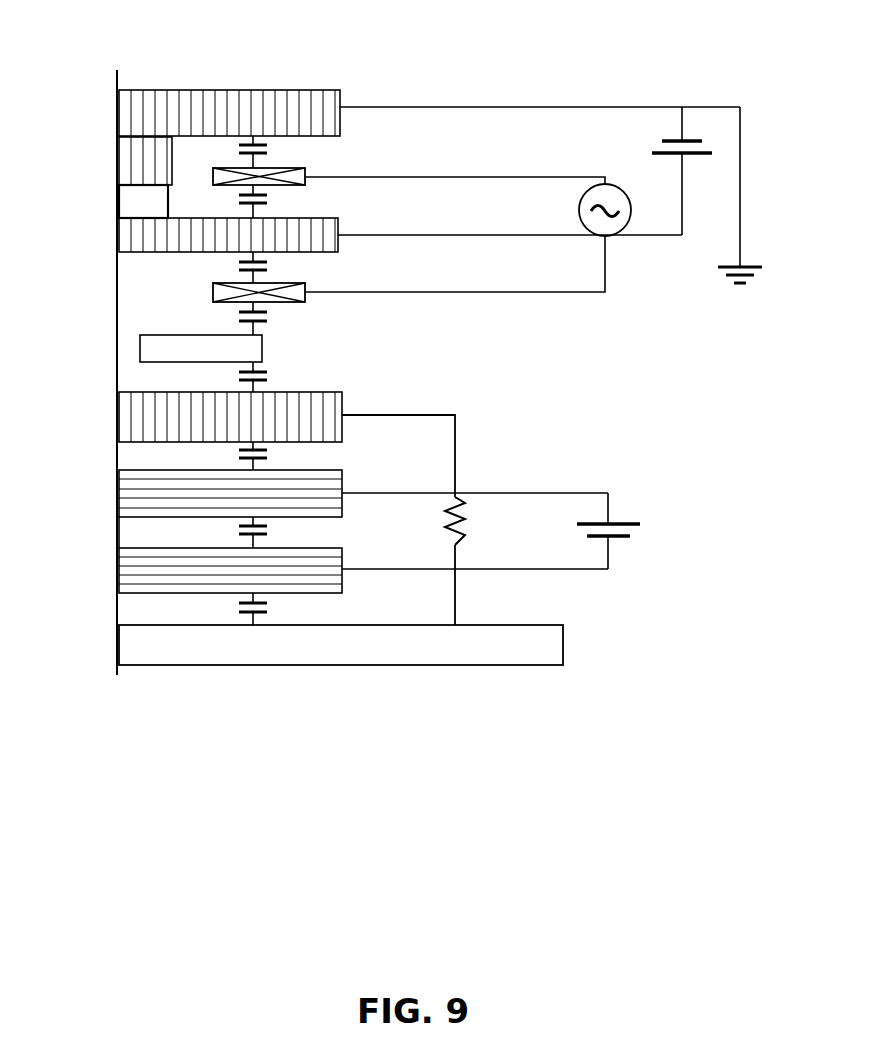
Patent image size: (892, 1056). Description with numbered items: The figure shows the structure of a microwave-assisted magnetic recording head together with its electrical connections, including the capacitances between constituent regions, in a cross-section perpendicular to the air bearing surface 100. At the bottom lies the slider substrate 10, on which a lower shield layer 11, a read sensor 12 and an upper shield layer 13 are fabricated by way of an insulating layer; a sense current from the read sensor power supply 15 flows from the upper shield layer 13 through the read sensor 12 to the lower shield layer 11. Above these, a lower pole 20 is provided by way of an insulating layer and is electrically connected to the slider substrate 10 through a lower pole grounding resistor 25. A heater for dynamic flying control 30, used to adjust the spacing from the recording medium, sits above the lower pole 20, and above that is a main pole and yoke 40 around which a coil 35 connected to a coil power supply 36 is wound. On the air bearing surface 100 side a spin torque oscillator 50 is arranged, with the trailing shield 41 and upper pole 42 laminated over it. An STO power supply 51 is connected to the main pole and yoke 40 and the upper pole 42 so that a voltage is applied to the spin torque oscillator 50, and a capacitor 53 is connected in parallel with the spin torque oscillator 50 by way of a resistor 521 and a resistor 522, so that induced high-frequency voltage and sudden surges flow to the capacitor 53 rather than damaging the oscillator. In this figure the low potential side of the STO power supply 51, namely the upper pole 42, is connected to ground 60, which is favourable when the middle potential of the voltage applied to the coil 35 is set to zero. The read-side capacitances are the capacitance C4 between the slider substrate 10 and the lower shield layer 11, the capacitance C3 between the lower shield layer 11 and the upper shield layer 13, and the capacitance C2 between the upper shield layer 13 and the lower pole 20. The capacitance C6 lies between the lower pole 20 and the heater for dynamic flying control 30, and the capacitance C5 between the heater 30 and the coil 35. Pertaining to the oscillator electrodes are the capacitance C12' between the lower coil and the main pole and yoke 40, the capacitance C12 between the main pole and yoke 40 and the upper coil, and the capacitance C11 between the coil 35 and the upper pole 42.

The air bearing surface 100 is at (117, 71).
The slider substrate 10 is at (132, 642).
The lower shield layer 11 is at (130, 575).
The read sensor 12 is at (130, 532).
The upper shield layer 13 is at (120, 492).
The read sensor power supply 15 is at (645, 536).
The lower pole 20 is at (123, 418).
The lower pole grounding resistor 25 is at (473, 523).
The heater for dynamic flying control 30 is at (147, 347).
The coil 35 is at (338, 252).
The coil power supply 36 is at (632, 212).
The main pole and yoke 40 is at (133, 233).
The trailing shield 41 is at (128, 165).
The upper pole 42 is at (128, 110).
The spin torque oscillator 50 is at (128, 204).
The STO power supply 51 is at (720, 145).
The resistor 521 is at (362, 202).
The resistor 522 is at (372, 115).
The capacitor 53 is at (430, 183).
The ground 60 is at (768, 277).
The capacitance between the coil and the upper pole C11 is at (276, 155).
The capacitance of the main pole and yoke and the upper coil C12 is at (276, 207).
The capacitance of the lower coil and the main pole and yoke C12' is at (279, 265).
The capacitance between the heater for dynamic flying control and the coil C5 is at (270, 324).
The capacitance between the lower pole and the heater for dynamic flying control C6 is at (270, 380).
The capacitance between the upper shield layer and the lower pole C2 is at (270, 456).
The capacitance between the lower shield layer and upper shield layer C3 is at (270, 538).
The capacitance between the slider substrate and the lower shield layer C4 is at (270, 613).